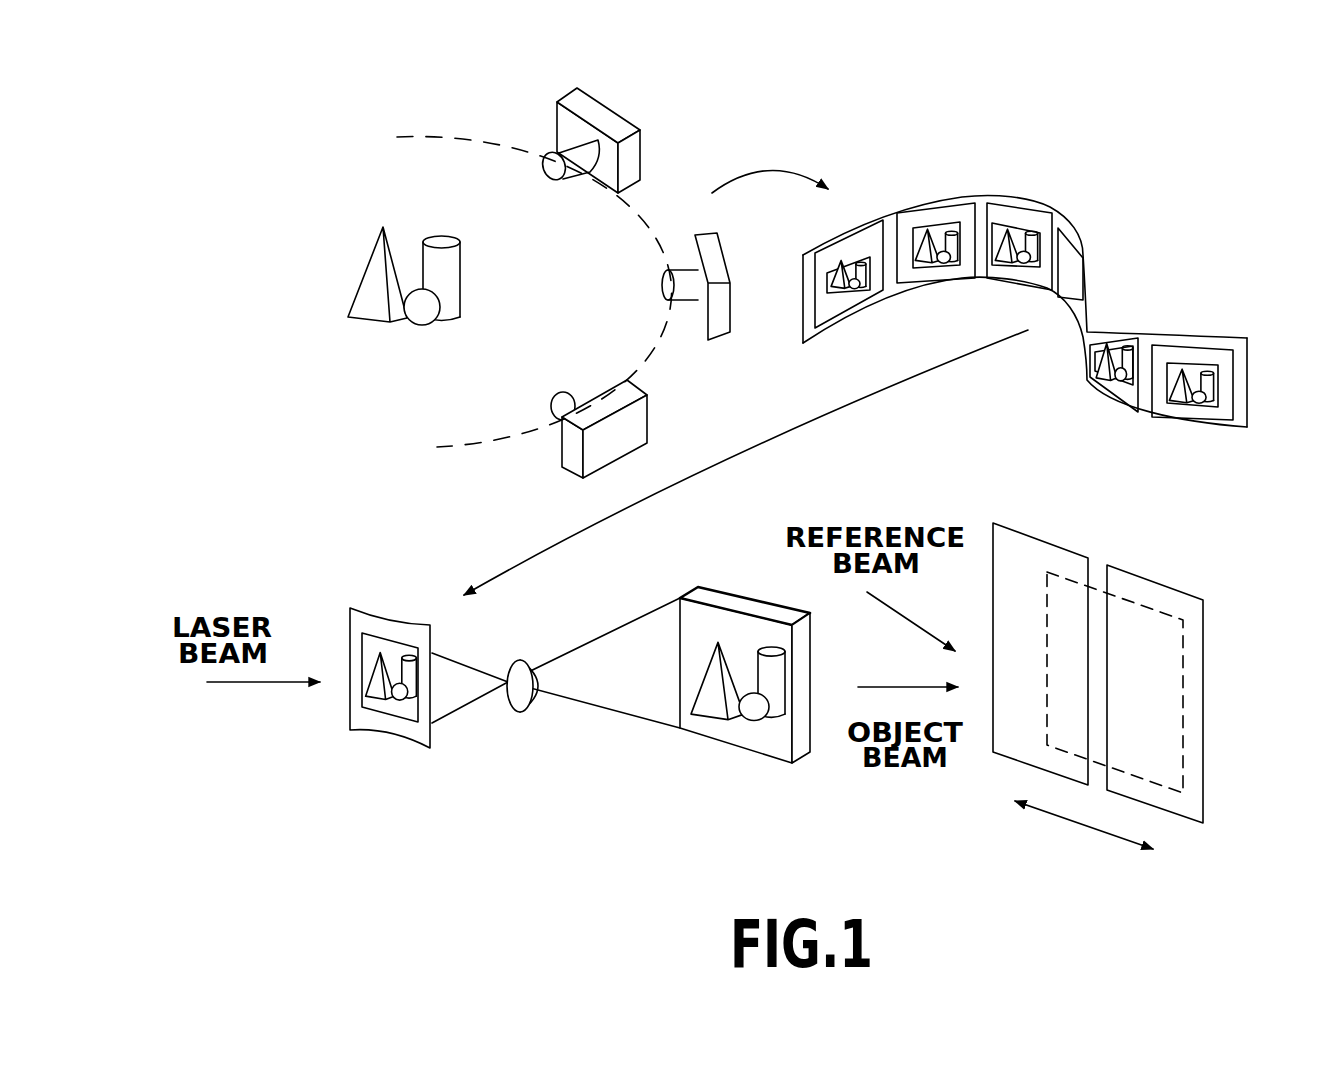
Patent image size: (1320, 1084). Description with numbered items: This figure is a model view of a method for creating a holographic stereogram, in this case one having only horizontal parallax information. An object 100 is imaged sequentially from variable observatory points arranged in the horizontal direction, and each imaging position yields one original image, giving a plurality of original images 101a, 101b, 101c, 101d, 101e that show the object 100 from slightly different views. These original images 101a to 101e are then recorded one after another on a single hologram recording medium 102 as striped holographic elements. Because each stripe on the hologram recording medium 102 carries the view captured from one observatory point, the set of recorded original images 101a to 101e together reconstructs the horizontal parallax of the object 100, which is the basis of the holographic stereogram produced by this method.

The object 100 is at (345, 260).
The original image 101a is at (863, 238).
The original image 101b is at (955, 215).
The original image 101c is at (1027, 227).
The original image 101d is at (1102, 332).
The original image 101e is at (1213, 360).
The hologram recording medium 102 is at (1067, 580).